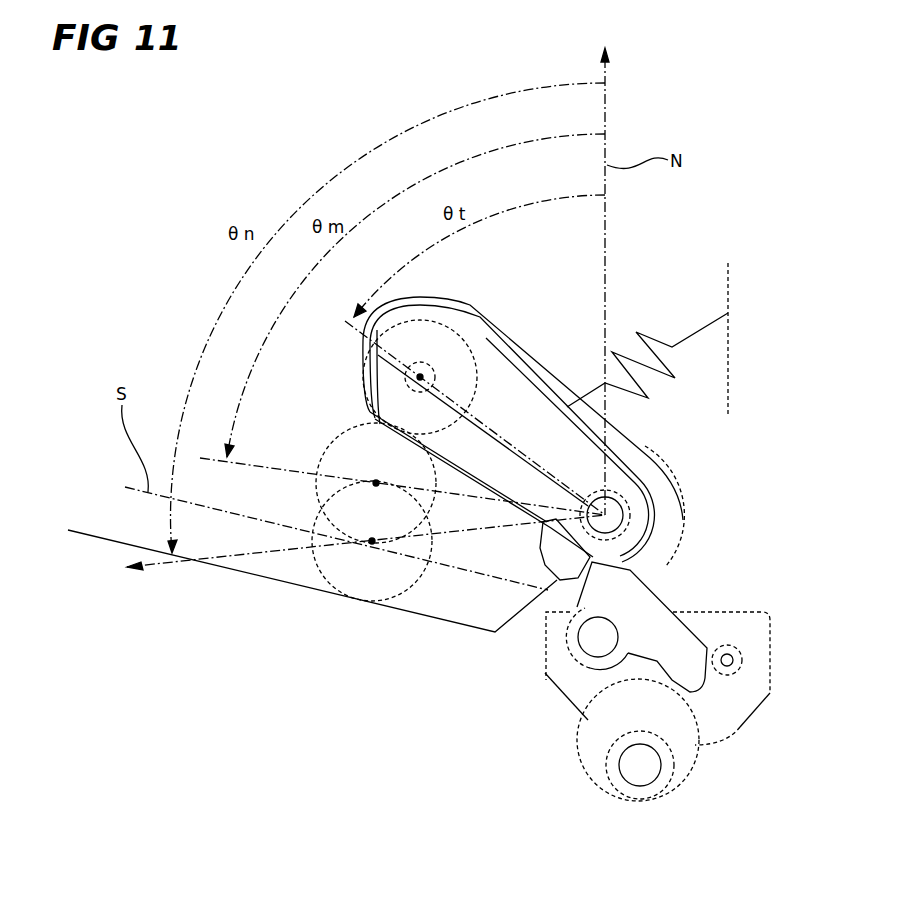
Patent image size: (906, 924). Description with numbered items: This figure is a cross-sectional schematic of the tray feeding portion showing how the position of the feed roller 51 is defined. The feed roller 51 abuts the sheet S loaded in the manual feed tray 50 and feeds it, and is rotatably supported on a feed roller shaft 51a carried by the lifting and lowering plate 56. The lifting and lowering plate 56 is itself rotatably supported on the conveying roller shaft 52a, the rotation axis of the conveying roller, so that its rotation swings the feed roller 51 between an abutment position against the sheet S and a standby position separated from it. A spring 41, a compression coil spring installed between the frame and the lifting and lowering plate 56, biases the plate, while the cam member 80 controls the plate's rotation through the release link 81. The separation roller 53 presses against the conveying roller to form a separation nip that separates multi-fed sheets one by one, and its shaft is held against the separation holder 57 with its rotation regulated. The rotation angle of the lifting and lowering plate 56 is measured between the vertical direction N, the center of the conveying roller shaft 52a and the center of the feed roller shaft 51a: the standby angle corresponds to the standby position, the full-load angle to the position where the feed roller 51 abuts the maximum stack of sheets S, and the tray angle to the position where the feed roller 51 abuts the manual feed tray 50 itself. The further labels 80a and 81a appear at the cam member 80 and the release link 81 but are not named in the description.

The spring 41 is at (677, 340).
The manual feed tray 50 is at (83, 530).
The feed roller 51 is at (362, 368).
The feed roller shaft 51a is at (480, 322).
The conveying roller shaft 52a is at (627, 493).
The separation roller 53 is at (535, 647).
The lifting and lowering plate 56 is at (648, 458).
The separation holder 57 is at (730, 717).
The cam member 80 is at (592, 767).
The roller shaft 80a is at (633, 777).
The release link 81 is at (655, 602).
The arm pivot 81a is at (593, 650).